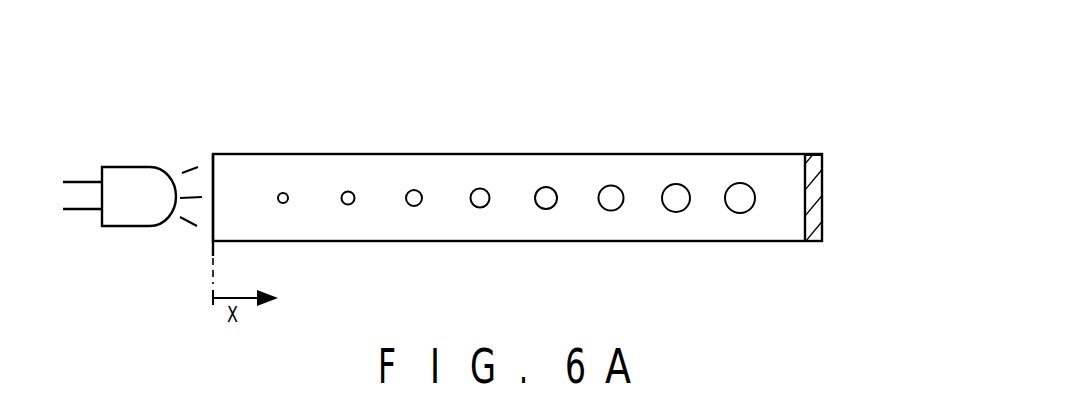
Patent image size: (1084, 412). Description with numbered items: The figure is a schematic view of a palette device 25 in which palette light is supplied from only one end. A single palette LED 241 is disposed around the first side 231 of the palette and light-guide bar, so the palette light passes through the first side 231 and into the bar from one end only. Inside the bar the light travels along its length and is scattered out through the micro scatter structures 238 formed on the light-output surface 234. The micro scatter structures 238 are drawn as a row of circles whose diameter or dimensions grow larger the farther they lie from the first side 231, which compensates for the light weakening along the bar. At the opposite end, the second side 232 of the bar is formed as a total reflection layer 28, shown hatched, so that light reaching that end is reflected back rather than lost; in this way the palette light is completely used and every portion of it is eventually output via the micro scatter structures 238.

The palette device 25 is at (267, 71).
The palette LED 241 is at (133, 182).
The first side 231 is at (213, 155).
The micro scatter structures 238 is at (545, 198).
The light-output surface 234 is at (648, 165).
The second side 232 is at (812, 154).
The total reflection layer 28 is at (818, 223).